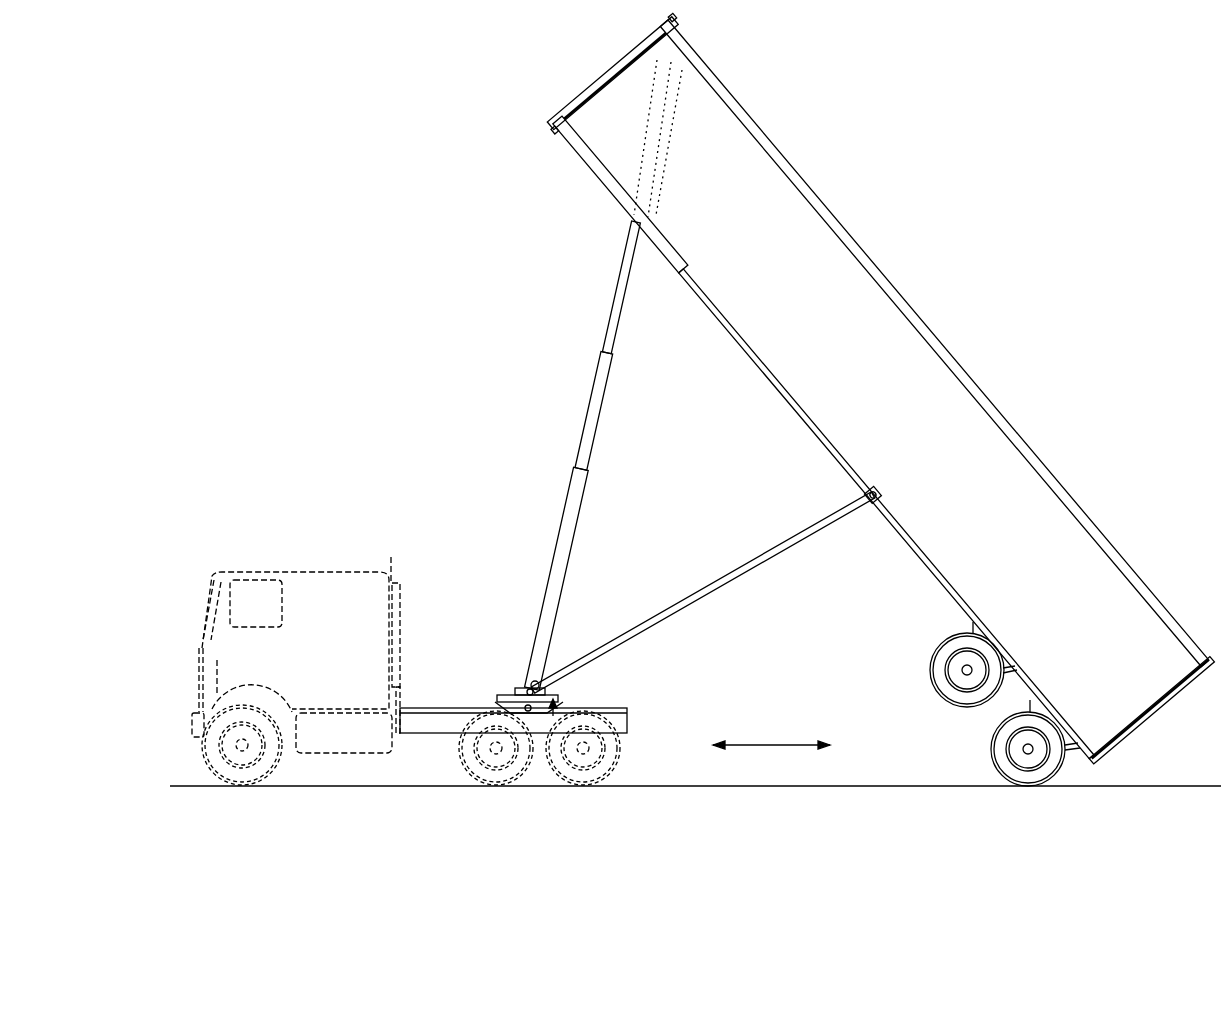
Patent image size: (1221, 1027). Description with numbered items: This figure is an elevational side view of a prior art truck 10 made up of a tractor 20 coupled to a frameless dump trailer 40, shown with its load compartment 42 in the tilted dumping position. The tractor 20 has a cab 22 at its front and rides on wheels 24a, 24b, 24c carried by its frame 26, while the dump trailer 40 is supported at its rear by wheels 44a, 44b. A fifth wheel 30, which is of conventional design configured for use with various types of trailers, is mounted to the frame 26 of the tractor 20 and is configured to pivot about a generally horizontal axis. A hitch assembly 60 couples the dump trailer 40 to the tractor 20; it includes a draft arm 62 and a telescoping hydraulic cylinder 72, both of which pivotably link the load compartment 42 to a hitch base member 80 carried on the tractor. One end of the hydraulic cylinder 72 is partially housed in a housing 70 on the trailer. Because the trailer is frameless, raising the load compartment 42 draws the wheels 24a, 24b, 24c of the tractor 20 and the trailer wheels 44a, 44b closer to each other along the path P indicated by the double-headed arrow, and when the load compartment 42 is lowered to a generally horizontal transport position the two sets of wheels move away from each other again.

The truck 10 is at (395, 290).
The tractor 20 is at (278, 568).
The cab 22 is at (205, 627).
The wheel 24a is at (205, 760).
The wheel 24b is at (507, 782).
The wheel 24c is at (570, 782).
The frame 26 is at (407, 735).
The fifth wheel 30 is at (570, 700).
The frameless dump trailer 40 is at (617, 63).
The load compartment 42 is at (1065, 480).
The wheel 44a is at (932, 655).
The wheel 44b is at (992, 735).
The hitch assembly 60 is at (544, 674).
The draft arm 62 is at (768, 550).
The housing 70 is at (683, 118).
The telescoping hydraulic cylinder 72 is at (620, 333).
The hitch base member 80 is at (508, 693).
The path P is at (772, 743).